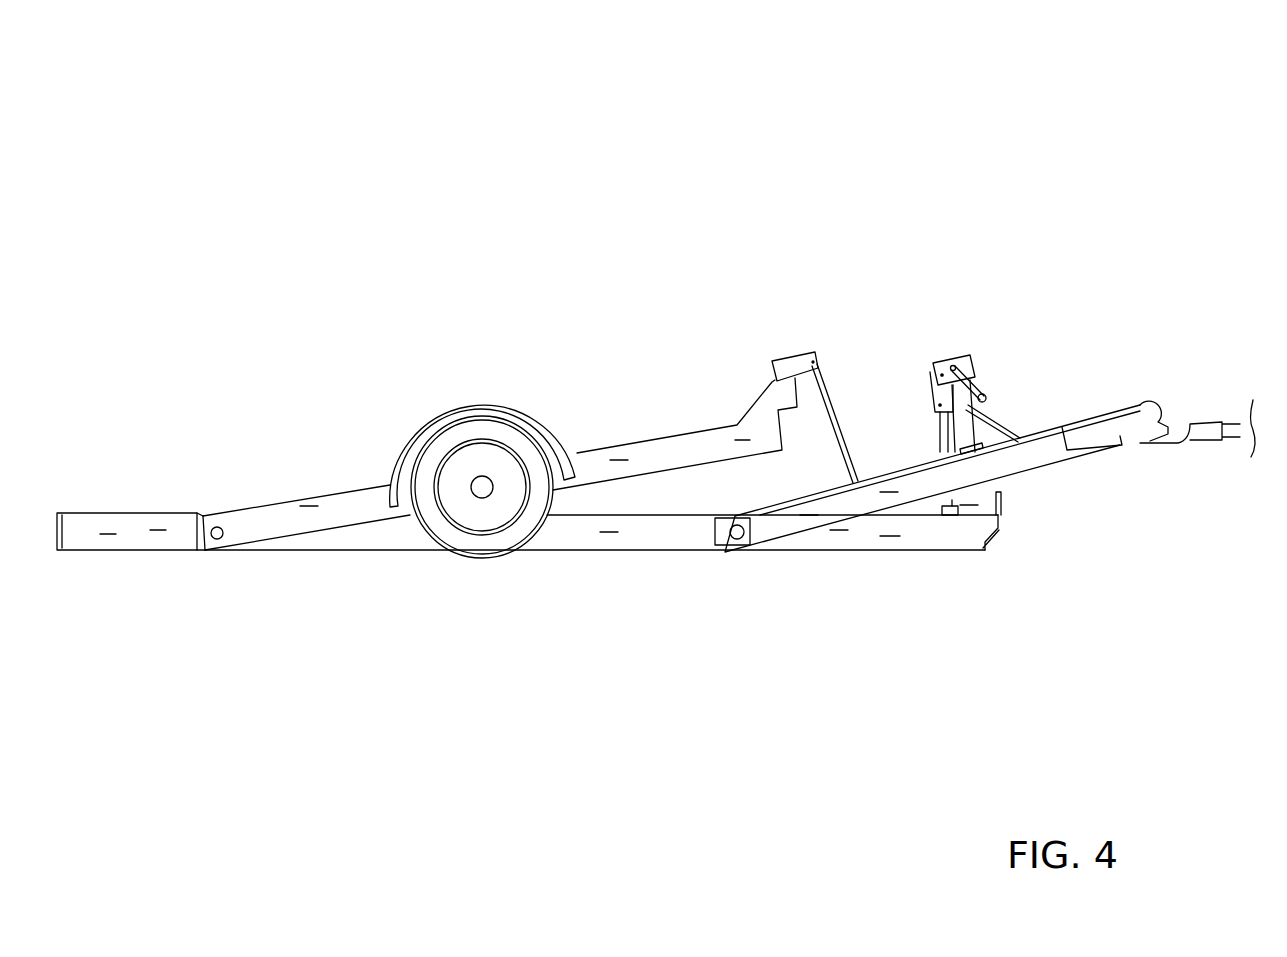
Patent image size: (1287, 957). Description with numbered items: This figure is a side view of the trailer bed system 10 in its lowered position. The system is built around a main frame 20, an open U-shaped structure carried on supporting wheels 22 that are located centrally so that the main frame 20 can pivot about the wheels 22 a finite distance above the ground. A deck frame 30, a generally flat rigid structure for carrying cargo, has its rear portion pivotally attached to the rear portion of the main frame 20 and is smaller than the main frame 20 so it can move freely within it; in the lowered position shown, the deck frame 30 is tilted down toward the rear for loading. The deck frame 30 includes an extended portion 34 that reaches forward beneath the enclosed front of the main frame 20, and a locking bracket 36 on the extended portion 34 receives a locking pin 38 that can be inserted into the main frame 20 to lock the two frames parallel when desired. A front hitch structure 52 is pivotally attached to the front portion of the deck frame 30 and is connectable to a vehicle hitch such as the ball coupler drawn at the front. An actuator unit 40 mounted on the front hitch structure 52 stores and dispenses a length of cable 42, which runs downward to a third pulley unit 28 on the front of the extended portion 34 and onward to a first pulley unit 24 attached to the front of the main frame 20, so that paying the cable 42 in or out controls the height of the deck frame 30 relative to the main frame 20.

The trailer bed system 10 is at (500, 131).
The main frame 20 is at (303, 478).
The supporting wheels 22 is at (465, 540).
The first pulley unit 24 is at (787, 363).
The third pulley unit 28 is at (952, 510).
The deck frame 30 is at (157, 490).
The extended portion 34 is at (873, 537).
The locking bracket 36 is at (1003, 510).
The locking pin 38 is at (1047, 498).
The actuator unit 40 is at (943, 365).
The cable 42 is at (930, 385).
The front hitch structure 52 is at (1043, 447).